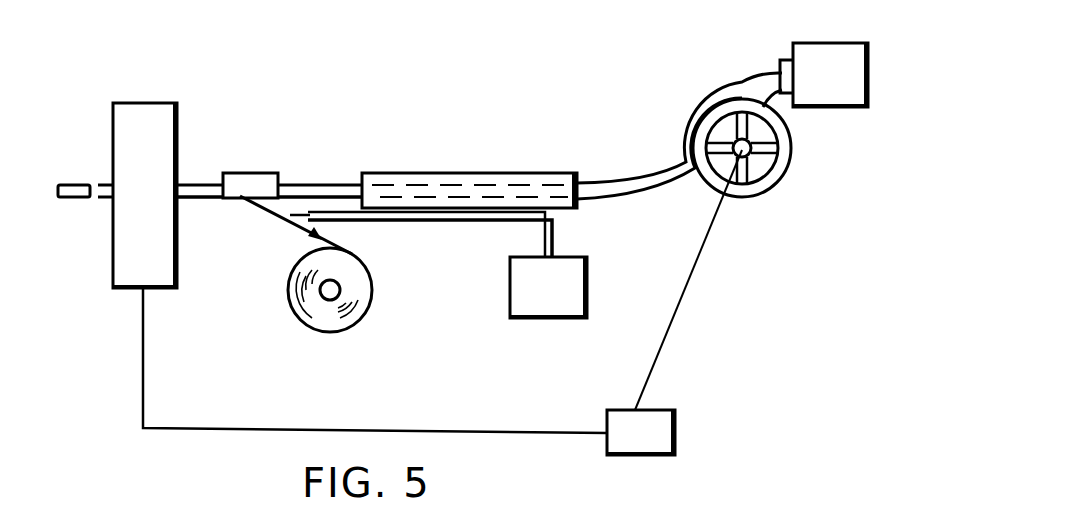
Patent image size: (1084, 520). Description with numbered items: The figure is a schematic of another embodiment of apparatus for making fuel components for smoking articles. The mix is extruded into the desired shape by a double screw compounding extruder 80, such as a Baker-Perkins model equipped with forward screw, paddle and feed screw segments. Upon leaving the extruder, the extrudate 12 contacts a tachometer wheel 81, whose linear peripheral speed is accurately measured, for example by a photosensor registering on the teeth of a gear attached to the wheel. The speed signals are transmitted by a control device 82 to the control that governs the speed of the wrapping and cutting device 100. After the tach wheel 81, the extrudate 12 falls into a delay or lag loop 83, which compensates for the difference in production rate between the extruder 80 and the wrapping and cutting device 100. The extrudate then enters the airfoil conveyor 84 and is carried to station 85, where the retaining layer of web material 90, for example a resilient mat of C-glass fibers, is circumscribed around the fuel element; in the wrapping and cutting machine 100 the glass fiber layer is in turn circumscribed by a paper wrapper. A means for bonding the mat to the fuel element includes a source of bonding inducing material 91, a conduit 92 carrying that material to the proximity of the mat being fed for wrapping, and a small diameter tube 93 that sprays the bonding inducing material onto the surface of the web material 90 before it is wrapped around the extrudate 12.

The wrapping and cutting device 100 is at (165, 120).
The station 85 is at (252, 185).
The small diameter tube 93 is at (294, 215).
The airfoil conveyor 84 is at (478, 172).
The extrudate 12 is at (745, 85).
The double screw compounding extruder 80 is at (822, 62).
The tachometer wheel 81 is at (790, 150).
The delay or lag loop 83 is at (650, 181).
The web material 90 is at (284, 222).
The conduit 92 is at (456, 222).
The source of bonding inducing material 91 is at (528, 302).
The control device 82 is at (667, 428).